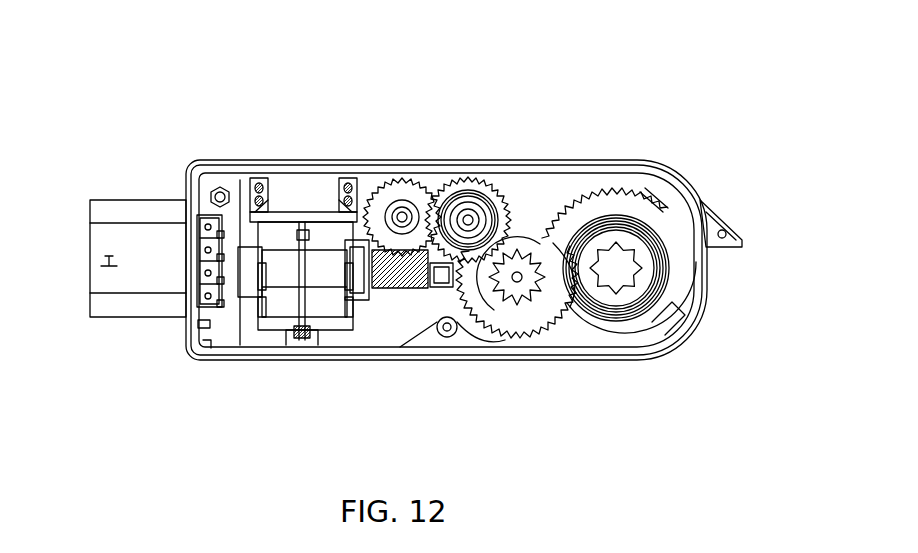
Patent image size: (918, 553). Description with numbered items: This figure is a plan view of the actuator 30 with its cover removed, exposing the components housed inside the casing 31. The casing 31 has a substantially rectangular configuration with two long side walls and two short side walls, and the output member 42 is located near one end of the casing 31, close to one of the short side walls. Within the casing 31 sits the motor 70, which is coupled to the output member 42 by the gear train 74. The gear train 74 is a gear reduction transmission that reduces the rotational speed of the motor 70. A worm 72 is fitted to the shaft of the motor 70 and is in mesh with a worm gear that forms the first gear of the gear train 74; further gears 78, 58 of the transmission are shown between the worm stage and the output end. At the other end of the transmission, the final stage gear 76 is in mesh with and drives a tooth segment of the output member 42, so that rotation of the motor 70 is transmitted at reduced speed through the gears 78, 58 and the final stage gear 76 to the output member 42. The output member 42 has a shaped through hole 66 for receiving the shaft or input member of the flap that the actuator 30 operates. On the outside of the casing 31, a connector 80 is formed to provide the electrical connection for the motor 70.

The actuator 30 is at (200, 117).
The casing 31 is at (670, 353).
The output member 42 is at (701, 200).
The output gear 58 is at (592, 190).
The shaped through hole 66 is at (613, 268).
The motor 70 is at (287, 303).
The worm 72 is at (402, 287).
The gear train 74 is at (478, 177).
The final stage gear 76 is at (525, 283).
The gear 78 is at (401, 178).
The connector 80 is at (125, 302).